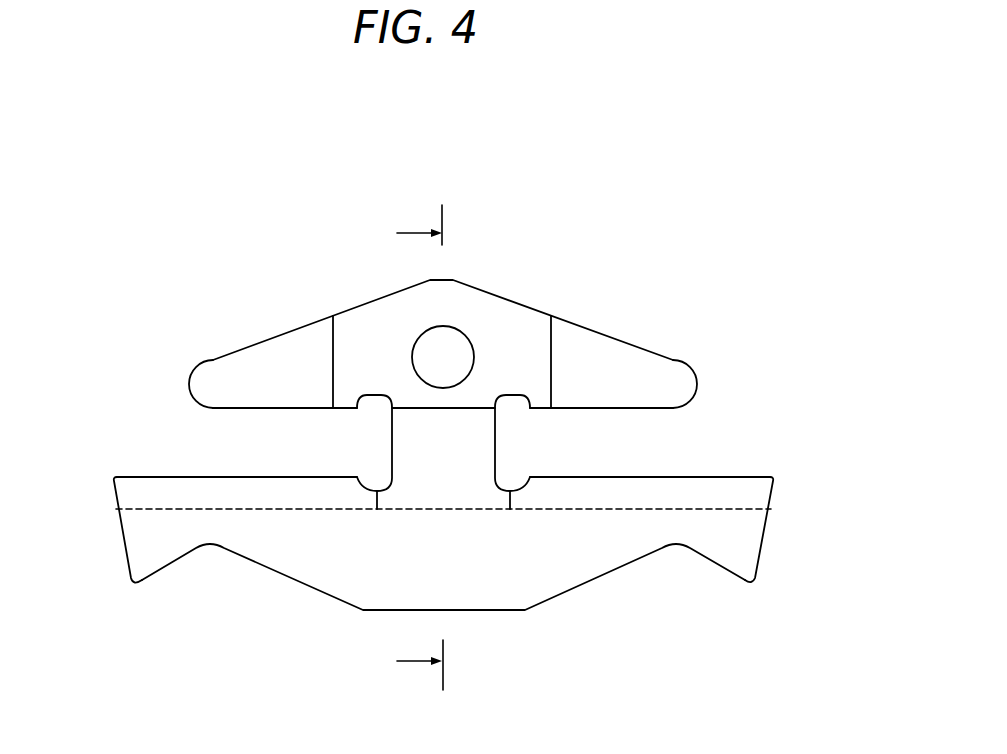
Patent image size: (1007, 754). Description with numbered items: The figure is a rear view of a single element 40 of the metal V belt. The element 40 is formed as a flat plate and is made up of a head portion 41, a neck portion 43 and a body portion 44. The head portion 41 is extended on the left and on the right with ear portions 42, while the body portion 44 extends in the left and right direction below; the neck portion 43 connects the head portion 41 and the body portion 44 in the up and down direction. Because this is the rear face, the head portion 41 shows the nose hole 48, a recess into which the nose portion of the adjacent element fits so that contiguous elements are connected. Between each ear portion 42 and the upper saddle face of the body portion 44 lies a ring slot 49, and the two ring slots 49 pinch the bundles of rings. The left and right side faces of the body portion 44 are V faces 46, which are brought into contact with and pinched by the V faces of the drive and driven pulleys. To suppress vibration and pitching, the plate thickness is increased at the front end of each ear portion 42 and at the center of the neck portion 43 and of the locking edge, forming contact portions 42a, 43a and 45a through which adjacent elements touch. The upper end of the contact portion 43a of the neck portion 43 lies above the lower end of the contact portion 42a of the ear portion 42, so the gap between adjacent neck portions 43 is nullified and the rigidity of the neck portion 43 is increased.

The element 40 is at (648, 218).
The head portion 41 is at (503, 301).
The ear portions 42 is at (268, 338).
The contact portion 42a is at (306, 388).
The neck portion 43 is at (487, 440).
The contact portion 43a is at (476, 457).
The body portion 44 is at (580, 577).
The contact portion 45a is at (476, 503).
The V faces 46 is at (120, 541).
The nose hole 48 is at (474, 346).
The ring slots 49 is at (288, 448).